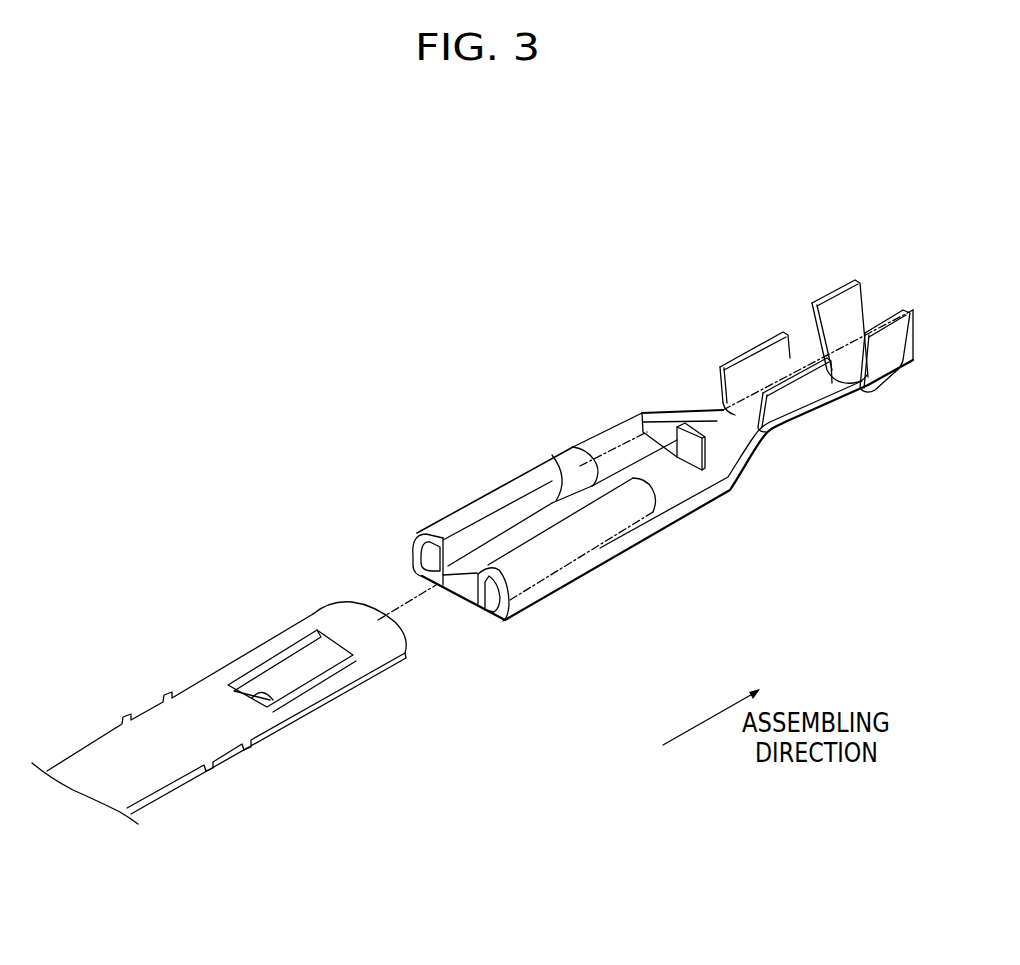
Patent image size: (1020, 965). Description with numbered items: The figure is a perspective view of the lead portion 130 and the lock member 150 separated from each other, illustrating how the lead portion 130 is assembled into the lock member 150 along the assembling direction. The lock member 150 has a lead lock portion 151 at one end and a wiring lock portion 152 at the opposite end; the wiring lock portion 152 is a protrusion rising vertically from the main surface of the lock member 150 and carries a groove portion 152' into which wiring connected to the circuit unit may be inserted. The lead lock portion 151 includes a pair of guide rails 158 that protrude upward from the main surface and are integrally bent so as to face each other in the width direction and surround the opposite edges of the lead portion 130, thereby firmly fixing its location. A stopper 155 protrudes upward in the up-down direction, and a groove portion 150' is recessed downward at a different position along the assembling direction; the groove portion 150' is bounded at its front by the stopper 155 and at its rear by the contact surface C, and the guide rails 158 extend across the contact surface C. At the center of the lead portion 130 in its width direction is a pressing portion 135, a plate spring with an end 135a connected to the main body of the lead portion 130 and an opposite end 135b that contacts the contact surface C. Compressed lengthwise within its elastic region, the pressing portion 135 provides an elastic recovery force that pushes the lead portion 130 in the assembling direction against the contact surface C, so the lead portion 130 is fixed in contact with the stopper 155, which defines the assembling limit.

The lead portion 130 is at (234, 795).
The pressing portion 135 is at (287, 678).
The end 135a is at (320, 637).
The opposite end 135b is at (285, 702).
The lock member 150 is at (665, 479).
The groove portion 150' is at (608, 419).
The lead lock portion 151 is at (479, 398).
The wiring lock portion 152 is at (794, 277).
The groove portion 152' is at (834, 399).
The stopper 155 is at (685, 426).
The guide rail 158 is at (533, 551).
The contact surface C is at (553, 500).